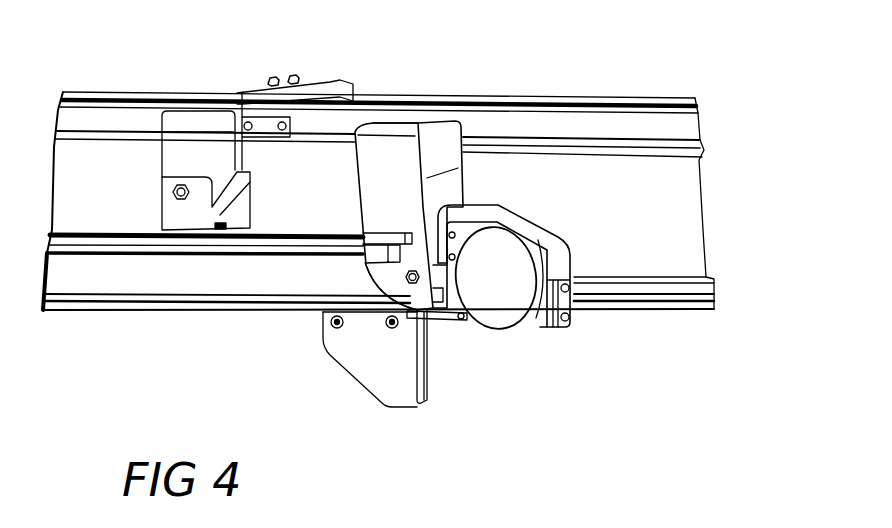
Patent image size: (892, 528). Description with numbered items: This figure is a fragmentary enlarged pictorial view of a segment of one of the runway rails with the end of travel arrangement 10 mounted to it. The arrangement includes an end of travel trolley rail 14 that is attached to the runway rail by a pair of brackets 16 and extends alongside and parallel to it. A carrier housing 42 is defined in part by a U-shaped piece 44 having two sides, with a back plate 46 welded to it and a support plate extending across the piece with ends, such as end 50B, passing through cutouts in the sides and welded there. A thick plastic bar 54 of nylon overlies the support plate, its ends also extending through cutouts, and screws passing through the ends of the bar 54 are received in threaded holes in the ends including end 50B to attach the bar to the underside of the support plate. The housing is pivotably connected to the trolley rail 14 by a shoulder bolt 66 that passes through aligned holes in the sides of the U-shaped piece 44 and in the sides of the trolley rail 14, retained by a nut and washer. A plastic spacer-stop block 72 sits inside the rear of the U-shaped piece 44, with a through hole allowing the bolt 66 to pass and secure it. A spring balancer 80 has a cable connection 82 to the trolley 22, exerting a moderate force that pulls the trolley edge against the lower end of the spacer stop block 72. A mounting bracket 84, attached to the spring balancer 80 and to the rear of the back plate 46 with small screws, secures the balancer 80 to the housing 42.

The end of travel arrangement 10 is at (563, 400).
The end of travel trolley rail 14 is at (135, 308).
The brackets 16 is at (240, 97).
The trolley 22 is at (355, 357).
The carrier housing 42 is at (397, 125).
The U-shaped piece 44 is at (386, 239).
The back plate 46 is at (462, 188).
The end of support plate 50B is at (385, 233).
The thick plastic bar 54 is at (372, 273).
The shoulder bolt 66 is at (410, 284).
The plastic spacer-stop block 72 is at (467, 322).
The spring balancer 80 is at (507, 303).
The cable connection 82 is at (433, 320).
The mounting bracket 84 is at (522, 222).